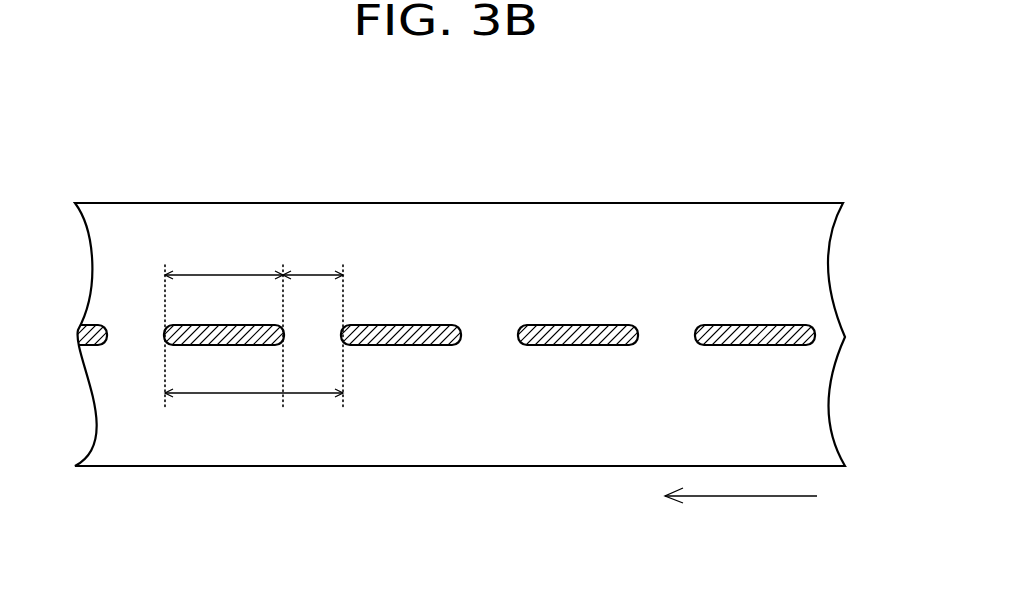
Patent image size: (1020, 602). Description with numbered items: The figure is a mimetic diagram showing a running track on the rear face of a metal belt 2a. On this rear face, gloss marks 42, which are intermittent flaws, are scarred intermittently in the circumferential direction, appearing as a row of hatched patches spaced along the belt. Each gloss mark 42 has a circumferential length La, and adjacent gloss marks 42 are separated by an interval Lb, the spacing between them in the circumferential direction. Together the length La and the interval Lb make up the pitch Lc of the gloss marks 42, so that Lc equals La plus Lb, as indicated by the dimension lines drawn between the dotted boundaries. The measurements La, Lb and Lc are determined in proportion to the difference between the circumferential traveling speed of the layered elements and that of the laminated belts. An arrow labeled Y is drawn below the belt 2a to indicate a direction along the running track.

The metal belt 2a is at (693, 203).
The gloss mark 42 is at (87, 324).
The length of gloss mark La is at (240, 273).
The interval of gloss mark Lb is at (310, 273).
The pitch of gloss mark Lc is at (237, 395).
The conveyance direction Y is at (737, 496).